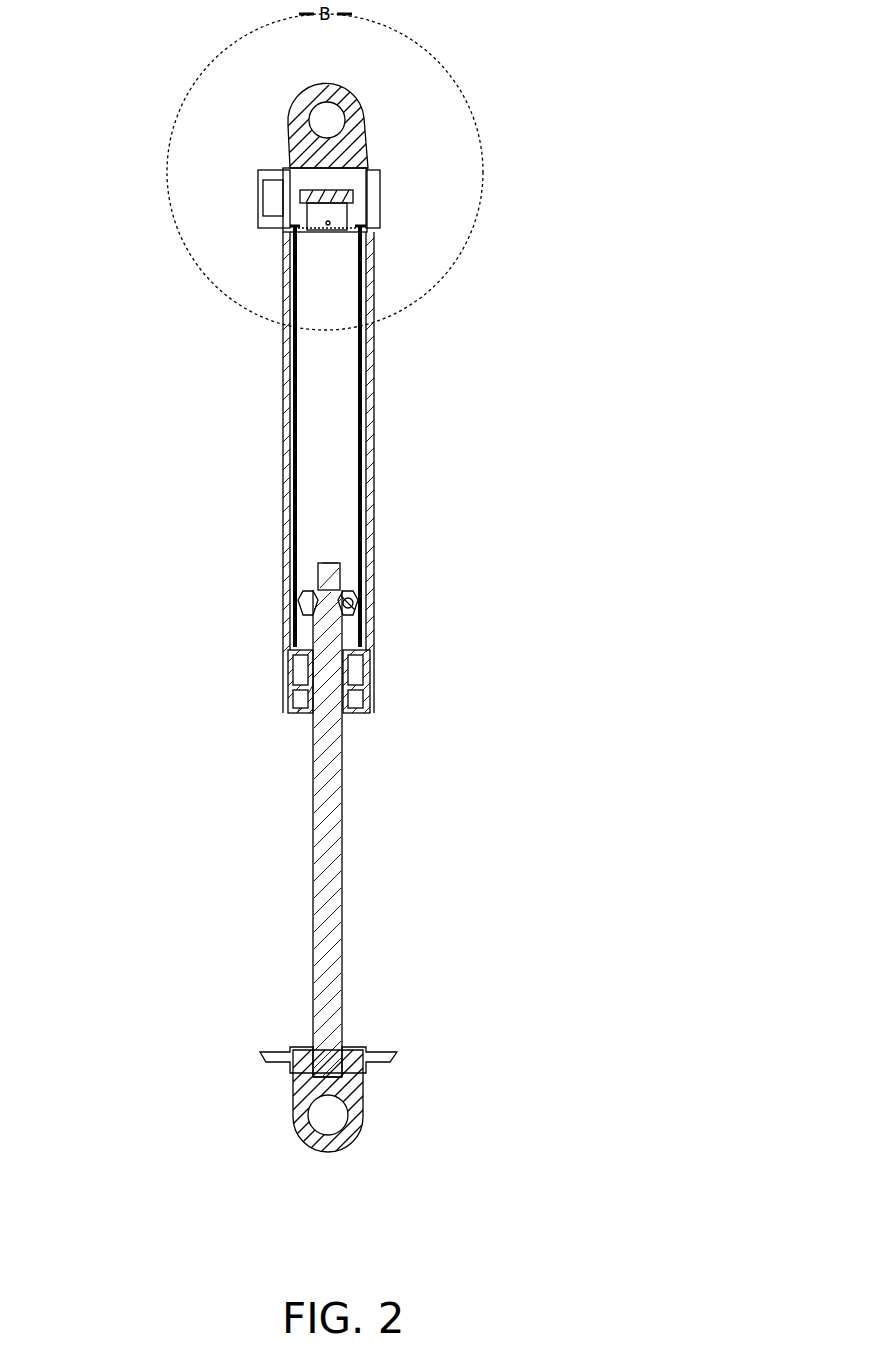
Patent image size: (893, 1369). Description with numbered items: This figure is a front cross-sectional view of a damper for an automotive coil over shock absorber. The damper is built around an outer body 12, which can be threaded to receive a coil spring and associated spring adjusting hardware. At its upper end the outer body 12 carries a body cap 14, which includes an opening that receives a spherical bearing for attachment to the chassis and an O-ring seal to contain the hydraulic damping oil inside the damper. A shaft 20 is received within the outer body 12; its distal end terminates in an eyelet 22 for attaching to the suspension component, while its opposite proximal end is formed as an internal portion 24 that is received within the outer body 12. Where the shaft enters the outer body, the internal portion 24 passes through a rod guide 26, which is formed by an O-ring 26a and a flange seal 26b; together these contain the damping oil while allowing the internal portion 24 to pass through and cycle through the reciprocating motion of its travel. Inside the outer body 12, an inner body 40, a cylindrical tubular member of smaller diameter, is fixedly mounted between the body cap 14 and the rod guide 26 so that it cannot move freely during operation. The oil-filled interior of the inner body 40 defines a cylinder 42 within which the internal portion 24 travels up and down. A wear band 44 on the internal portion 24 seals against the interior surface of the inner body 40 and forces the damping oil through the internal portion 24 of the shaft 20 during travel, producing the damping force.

The outer body 12 is at (369, 465).
The body cap 14 is at (360, 129).
The shaft 20 is at (442, 872).
The eyelet 22 is at (364, 1113).
The internal portion 24 is at (343, 630).
The rod guide 26 is at (213, 704).
The O-ring 26a is at (300, 692).
The flange seal 26b is at (292, 677).
The inner body 40 is at (357, 422).
The cylinder 42 is at (346, 486).
The wear band 44 is at (300, 598).